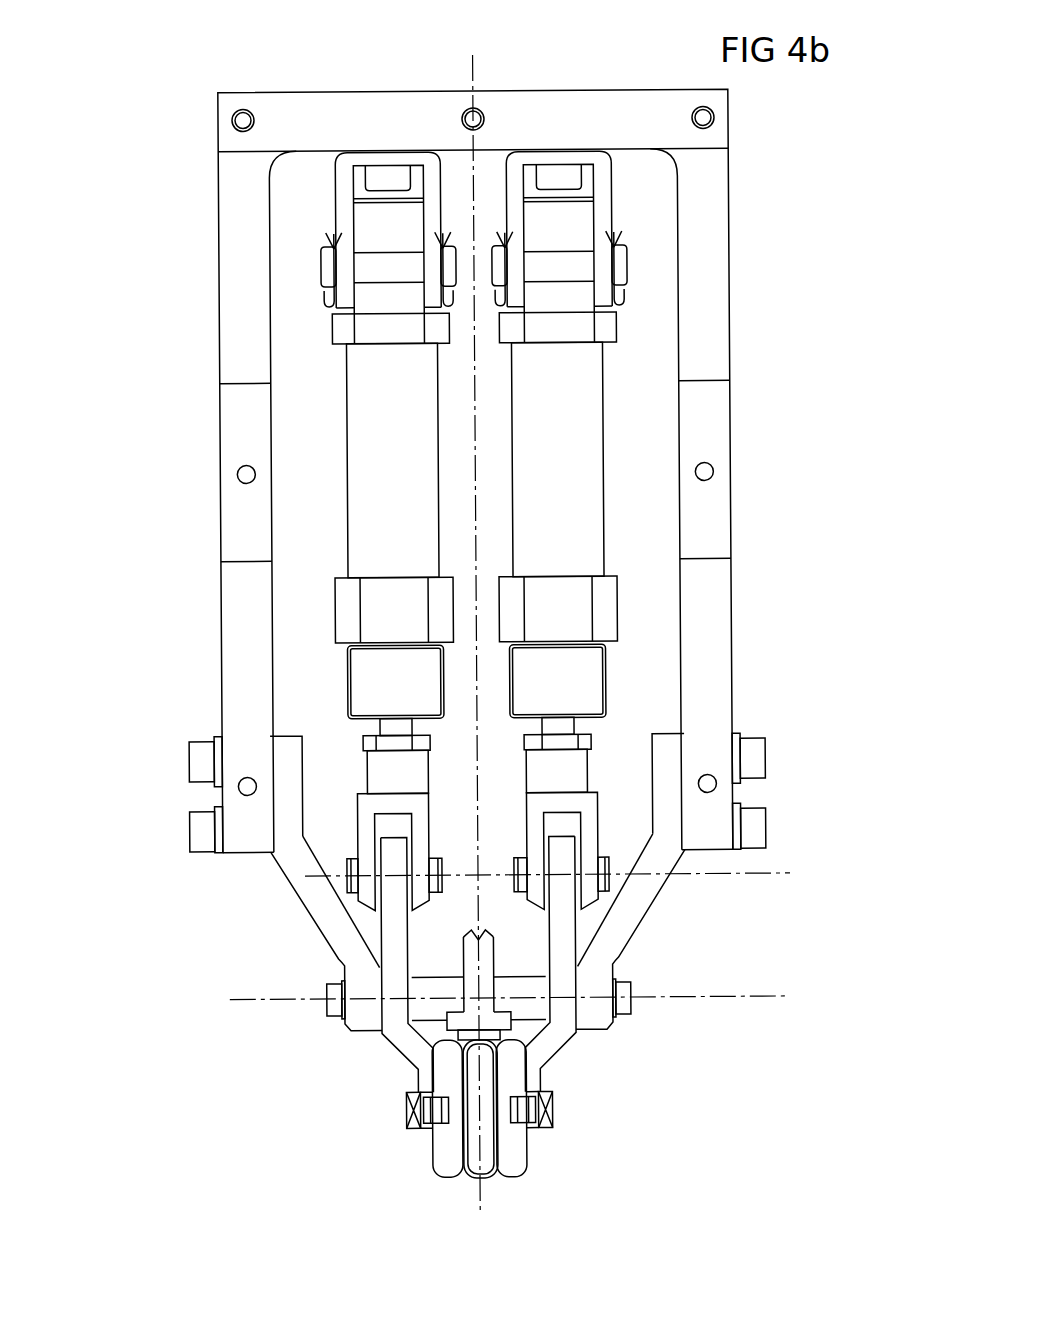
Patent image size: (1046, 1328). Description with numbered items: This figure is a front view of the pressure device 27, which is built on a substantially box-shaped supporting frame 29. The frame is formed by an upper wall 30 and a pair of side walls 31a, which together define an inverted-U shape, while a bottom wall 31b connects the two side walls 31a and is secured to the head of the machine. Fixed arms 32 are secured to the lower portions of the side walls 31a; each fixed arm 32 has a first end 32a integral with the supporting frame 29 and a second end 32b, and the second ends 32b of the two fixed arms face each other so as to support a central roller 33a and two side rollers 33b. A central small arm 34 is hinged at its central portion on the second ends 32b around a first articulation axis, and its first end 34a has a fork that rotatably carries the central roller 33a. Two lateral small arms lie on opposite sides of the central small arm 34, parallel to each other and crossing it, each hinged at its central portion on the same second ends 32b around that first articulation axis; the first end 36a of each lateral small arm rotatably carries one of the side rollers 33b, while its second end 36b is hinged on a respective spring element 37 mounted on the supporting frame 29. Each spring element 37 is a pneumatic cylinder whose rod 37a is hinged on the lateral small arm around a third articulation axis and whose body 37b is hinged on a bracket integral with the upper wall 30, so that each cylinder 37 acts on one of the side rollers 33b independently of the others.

The pressure device 27 is at (199, 1017).
The supporting frame 29 is at (199, 263).
The upper wall 30 is at (382, 112).
The side walls 31a is at (234, 213).
The bottom wall 31b is at (634, 431).
The fixed arms 32 is at (312, 901).
The first end 32a is at (668, 754).
The second end 32b is at (281, 754).
The central roller 33a is at (483, 1178).
The side rollers 33b is at (528, 1168).
The central small arm 34 is at (494, 955).
The first end 34a is at (452, 1022).
The first end 36a is at (530, 1083).
The second end 36b is at (560, 846).
The spring elements 37 is at (334, 499).
The rod 37a is at (383, 727).
The body 37b is at (580, 364).